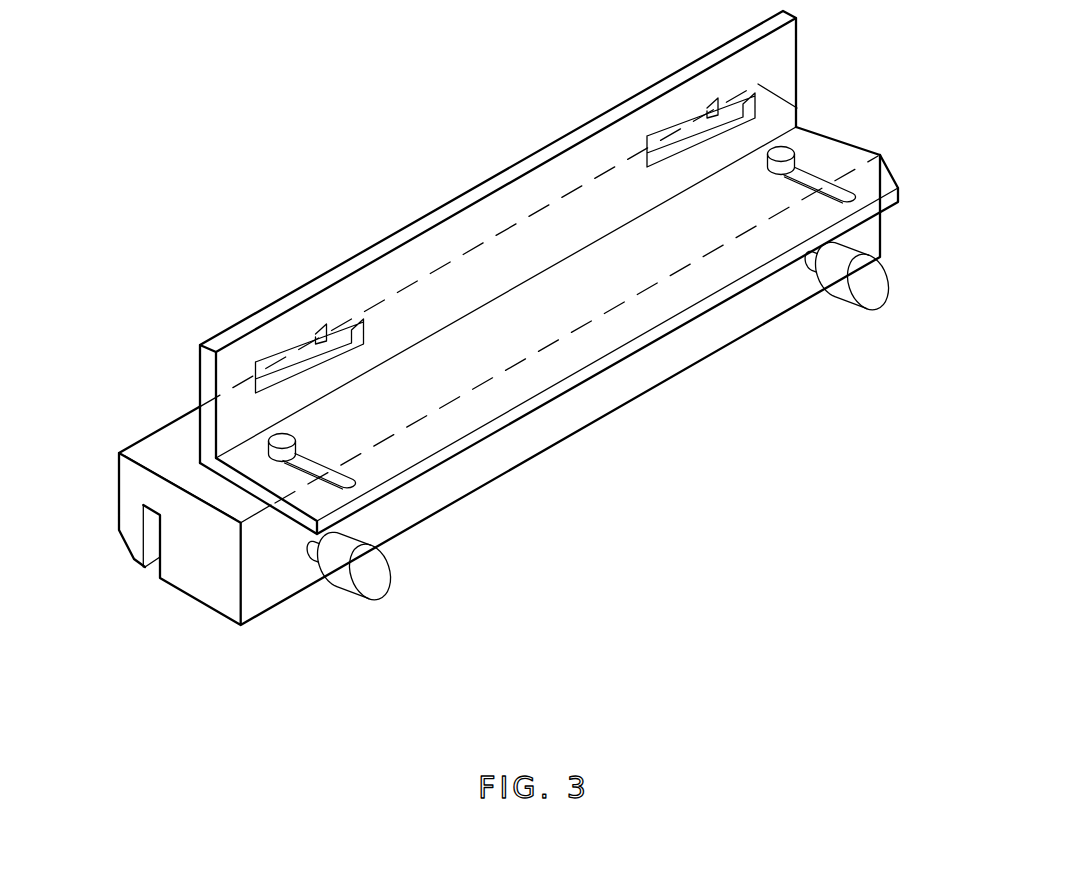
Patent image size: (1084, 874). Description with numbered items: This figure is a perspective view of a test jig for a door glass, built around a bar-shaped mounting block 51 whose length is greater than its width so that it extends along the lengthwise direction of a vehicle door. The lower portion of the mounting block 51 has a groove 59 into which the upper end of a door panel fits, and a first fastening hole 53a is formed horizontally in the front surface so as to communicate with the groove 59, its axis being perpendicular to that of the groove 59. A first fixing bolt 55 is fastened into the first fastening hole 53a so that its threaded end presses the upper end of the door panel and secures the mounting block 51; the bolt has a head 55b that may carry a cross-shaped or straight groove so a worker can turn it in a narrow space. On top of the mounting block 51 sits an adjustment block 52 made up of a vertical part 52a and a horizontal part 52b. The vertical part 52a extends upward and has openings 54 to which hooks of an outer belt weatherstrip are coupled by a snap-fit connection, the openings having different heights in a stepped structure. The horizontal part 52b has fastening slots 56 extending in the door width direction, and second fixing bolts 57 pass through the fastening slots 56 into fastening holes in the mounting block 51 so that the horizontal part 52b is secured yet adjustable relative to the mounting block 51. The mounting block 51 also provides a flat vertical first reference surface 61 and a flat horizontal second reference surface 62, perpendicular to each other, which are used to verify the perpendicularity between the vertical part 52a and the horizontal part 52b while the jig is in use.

The mounting block 51 is at (204, 594).
The adjustment block 52 is at (579, 277).
The vertical part 52a is at (781, 72).
The horizontal part 52b is at (830, 133).
The first fastening hole 53a is at (320, 554).
The opening 54 is at (676, 130).
The first fixing bolt 55 is at (635, 455).
The head 55b is at (343, 583).
The fastening slot 56 is at (318, 468).
The second fixing bolt 57 is at (300, 427).
The groove 59 is at (153, 557).
The first reference surface 61 is at (116, 490).
The second reference surface 62 is at (165, 450).